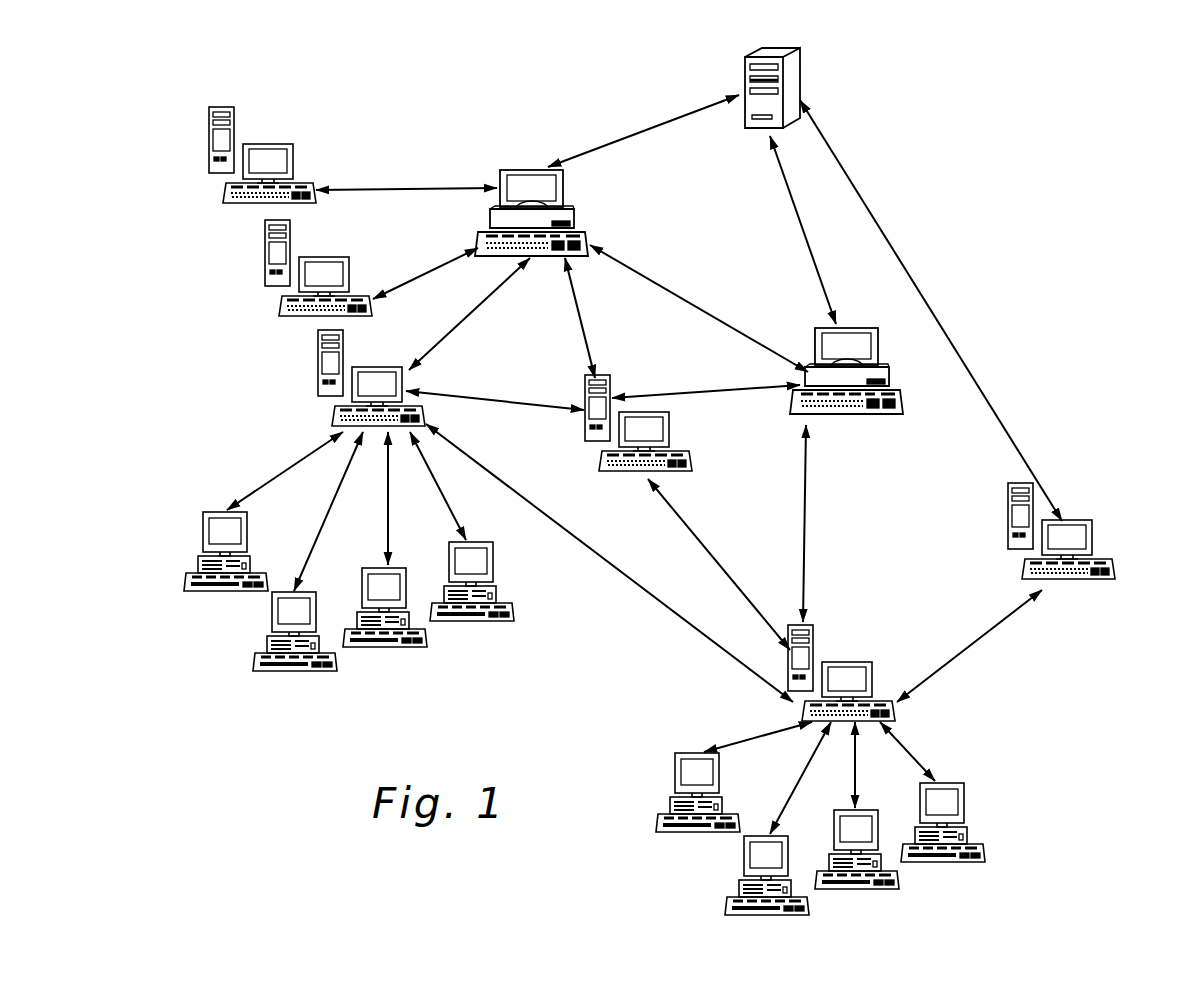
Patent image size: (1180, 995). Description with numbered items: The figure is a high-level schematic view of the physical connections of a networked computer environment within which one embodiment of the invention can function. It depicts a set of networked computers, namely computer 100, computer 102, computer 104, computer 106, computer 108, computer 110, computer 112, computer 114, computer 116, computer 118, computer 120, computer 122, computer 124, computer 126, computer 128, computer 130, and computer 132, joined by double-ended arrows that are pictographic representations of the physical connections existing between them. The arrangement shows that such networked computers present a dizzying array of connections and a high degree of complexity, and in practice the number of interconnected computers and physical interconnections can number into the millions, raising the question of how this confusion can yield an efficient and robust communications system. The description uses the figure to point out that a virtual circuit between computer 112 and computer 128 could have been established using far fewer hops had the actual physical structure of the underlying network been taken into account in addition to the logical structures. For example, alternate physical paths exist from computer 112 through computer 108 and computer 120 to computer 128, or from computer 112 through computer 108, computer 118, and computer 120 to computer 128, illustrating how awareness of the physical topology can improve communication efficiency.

The computer 100 is at (743, 76).
The computer 102 is at (503, 170).
The computer 104 is at (268, 144).
The computer 106 is at (326, 256).
The computer 108 is at (358, 366).
The computer 110 is at (203, 528).
The computer 112 is at (272, 608).
The computer 114 is at (382, 646).
The computer 116 is at (495, 564).
The computer 118 is at (668, 438).
The computer 120 is at (846, 656).
The computer 122 is at (672, 782).
The computer 124 is at (740, 850).
The computer 126 is at (850, 886).
The computer 128 is at (965, 806).
The computer 130 is at (1094, 545).
The computer 132 is at (816, 342).